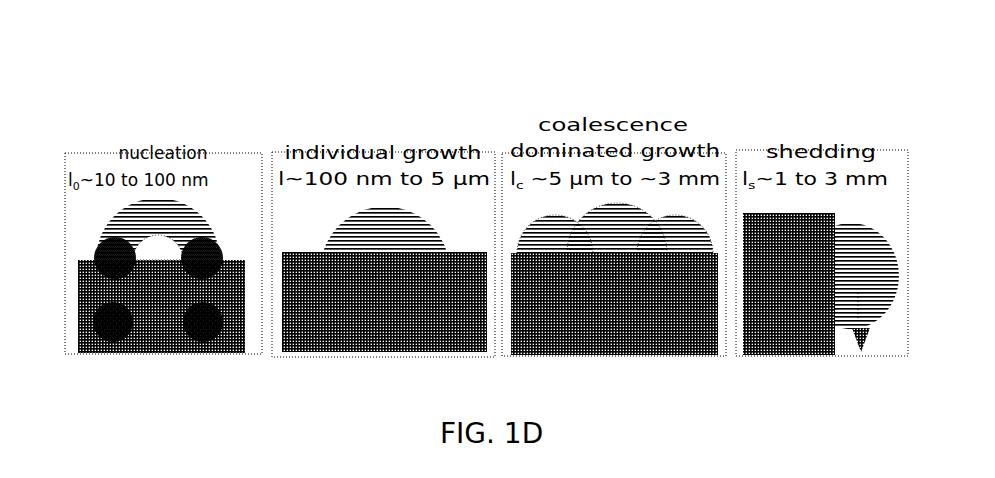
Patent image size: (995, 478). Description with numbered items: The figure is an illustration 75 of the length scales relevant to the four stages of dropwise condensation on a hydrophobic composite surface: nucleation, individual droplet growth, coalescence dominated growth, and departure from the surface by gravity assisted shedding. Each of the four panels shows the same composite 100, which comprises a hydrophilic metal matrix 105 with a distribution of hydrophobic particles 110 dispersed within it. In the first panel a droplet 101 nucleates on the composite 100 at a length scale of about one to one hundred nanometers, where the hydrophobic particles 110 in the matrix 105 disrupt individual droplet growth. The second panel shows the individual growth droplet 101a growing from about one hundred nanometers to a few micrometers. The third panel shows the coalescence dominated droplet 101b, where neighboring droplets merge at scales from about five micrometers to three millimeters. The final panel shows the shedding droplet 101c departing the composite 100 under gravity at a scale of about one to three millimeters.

The illustration 75 is at (144, 102).
The composite 100 is at (160, 345).
The droplet 101 is at (198, 215).
The individual growth droplet 101a is at (422, 212).
The coalescence dominated droplet 101b is at (658, 212).
The shedding droplet 101c is at (879, 235).
The matrix 105 is at (88, 333).
The hydrophobic particles 110 is at (100, 253).